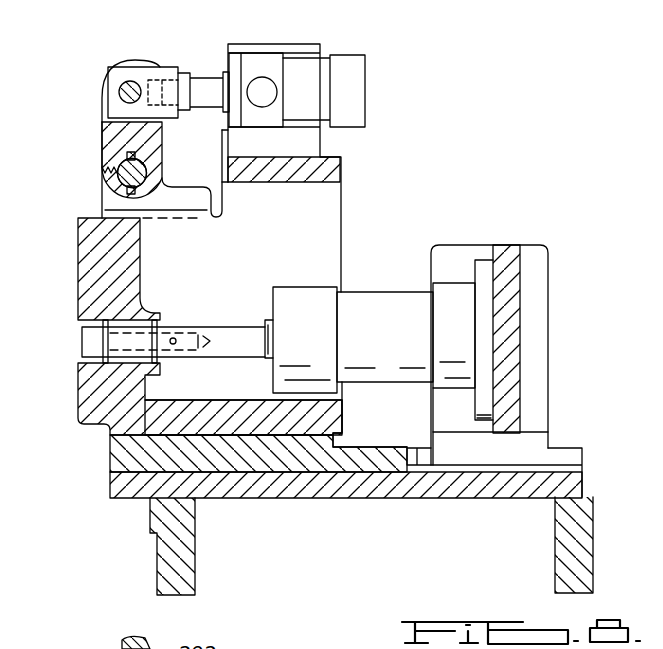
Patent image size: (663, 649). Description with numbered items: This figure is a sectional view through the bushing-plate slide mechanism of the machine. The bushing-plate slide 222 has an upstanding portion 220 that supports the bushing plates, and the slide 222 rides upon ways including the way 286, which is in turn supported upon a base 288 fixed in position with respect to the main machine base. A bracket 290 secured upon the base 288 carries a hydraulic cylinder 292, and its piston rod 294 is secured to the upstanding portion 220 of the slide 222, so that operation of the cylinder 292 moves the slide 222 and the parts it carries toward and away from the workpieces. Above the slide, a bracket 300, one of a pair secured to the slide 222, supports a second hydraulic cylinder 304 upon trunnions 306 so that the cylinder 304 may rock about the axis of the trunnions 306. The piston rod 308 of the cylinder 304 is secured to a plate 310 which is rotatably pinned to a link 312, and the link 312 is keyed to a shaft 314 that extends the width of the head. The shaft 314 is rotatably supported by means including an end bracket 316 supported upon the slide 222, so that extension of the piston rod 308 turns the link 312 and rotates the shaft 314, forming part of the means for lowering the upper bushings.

The upstanding portion 220 is at (127, 258).
The bushing-plate slide 222 is at (166, 403).
The way 286 is at (277, 465).
The base 288 is at (432, 488).
The bracket 290 is at (512, 322).
The hydraulic cylinder 292 is at (357, 295).
The piston rod 294 is at (222, 325).
The bracket 300 is at (305, 143).
The hydraulic cylinder 304 is at (312, 72).
The trunnions 306 is at (267, 92).
The piston rod 308 is at (205, 83).
The plate 310 is at (177, 50).
The link 312 is at (112, 137).
The shaft 314 is at (122, 177).
The end bracket 316 is at (177, 188).